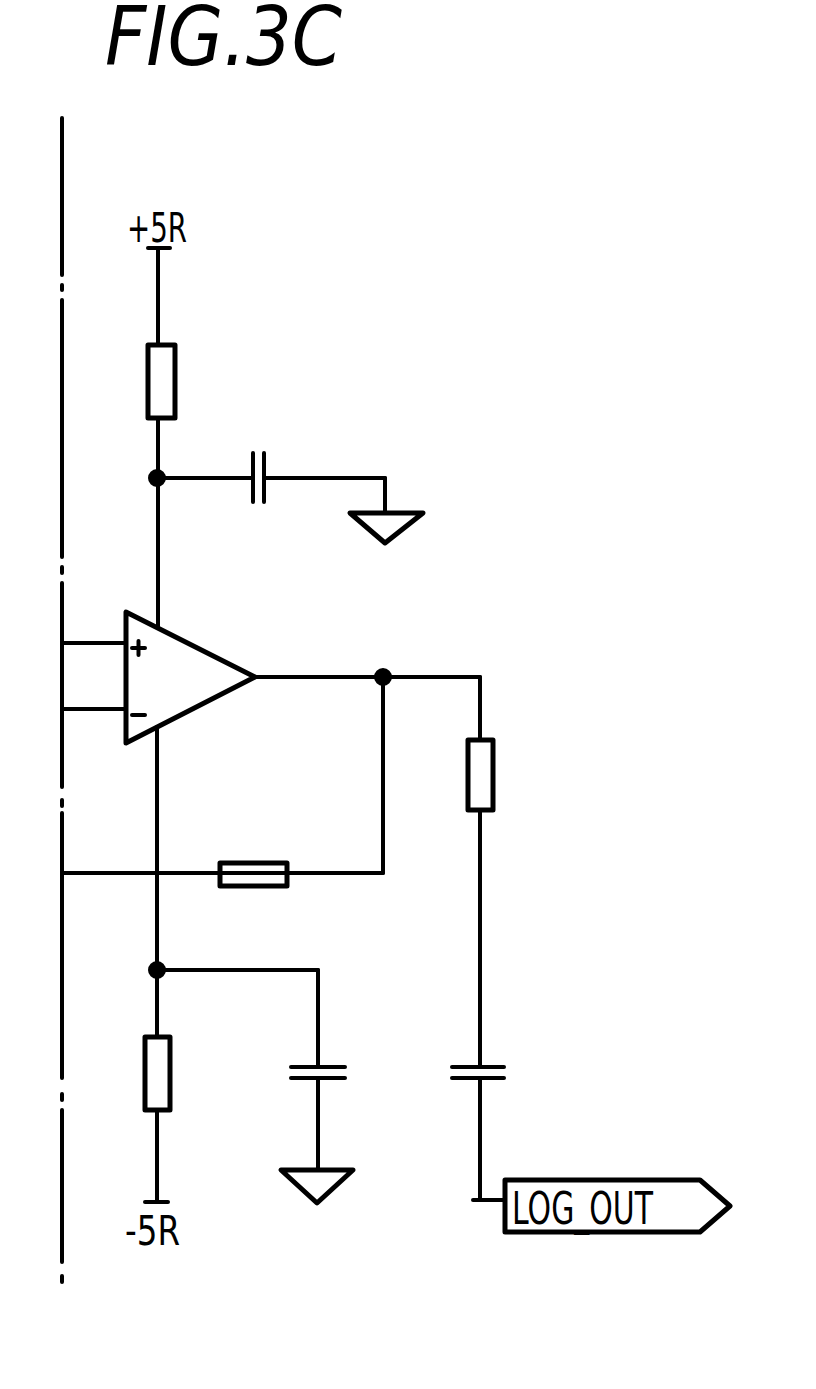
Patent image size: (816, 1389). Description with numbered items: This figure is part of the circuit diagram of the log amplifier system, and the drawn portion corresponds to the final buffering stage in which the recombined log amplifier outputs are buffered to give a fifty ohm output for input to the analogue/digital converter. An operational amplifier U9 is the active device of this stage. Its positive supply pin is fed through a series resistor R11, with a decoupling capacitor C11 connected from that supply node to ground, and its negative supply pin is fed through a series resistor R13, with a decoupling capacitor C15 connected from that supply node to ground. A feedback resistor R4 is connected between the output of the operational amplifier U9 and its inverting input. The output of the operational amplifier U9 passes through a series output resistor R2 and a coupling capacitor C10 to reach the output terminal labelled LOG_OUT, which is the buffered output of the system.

The resistor 10 ohm (positive supply) R11 is at (191, 386).
The capacitor 0.1uF (positive supply decoupling) C11 is at (290, 477).
The operational amplifier EL2130 U9 is at (235, 626).
The feedback resistor 1K R4 is at (222, 877).
The output series resistor 50 ohm R2 is at (511, 872).
The output coupling capacitor 0.1uF C10 is at (519, 1118).
The capacitor 0.1uF (negative supply decoupling) C15 is at (288, 1086).
The resistor 10 ohm (negative supply) R13 is at (186, 1119).